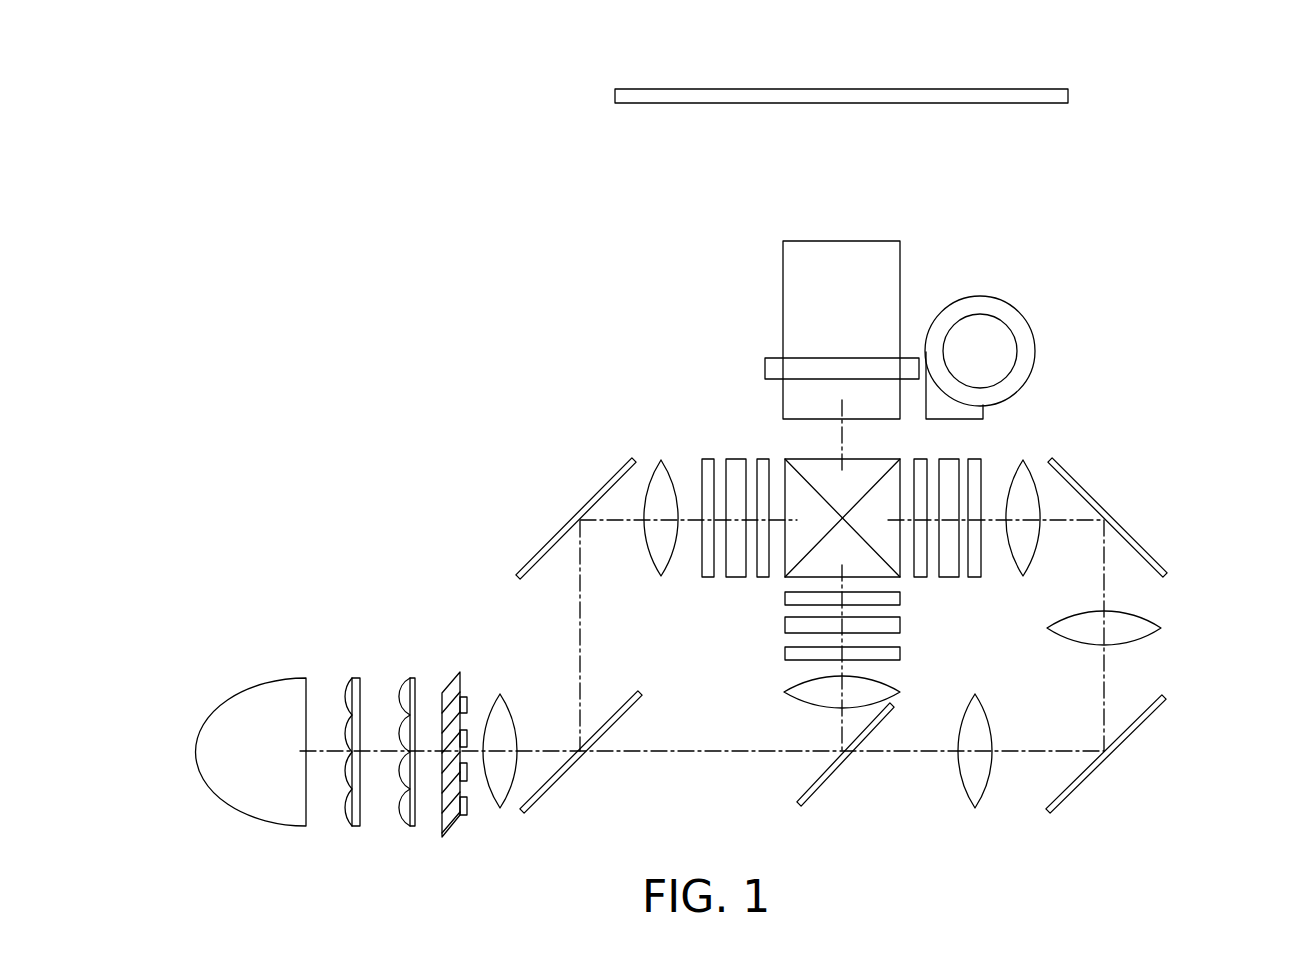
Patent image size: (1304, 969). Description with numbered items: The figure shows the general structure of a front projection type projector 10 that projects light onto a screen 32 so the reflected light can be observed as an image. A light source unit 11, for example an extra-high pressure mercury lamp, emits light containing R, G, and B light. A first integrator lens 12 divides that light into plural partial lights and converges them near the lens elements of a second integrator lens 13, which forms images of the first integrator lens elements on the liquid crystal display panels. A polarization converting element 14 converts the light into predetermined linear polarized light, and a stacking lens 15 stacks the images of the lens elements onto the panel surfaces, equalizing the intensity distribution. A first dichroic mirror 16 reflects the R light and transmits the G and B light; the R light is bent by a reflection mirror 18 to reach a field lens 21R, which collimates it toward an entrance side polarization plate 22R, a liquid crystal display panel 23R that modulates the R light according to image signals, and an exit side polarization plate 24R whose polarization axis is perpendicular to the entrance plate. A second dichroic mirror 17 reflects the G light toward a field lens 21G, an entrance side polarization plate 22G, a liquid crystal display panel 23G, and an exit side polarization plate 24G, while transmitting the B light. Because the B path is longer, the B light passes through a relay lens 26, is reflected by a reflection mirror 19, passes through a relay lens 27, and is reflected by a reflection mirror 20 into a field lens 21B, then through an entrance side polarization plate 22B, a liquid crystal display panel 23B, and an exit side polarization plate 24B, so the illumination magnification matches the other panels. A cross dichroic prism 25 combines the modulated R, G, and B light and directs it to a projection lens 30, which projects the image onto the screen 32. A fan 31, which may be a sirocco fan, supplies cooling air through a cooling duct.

The projector 10 is at (536, 266).
The light source unit 11 is at (272, 692).
The first integrator lens 12 is at (357, 680).
The second integrator lens 13 is at (410, 680).
The polarization converting element 14 is at (458, 672).
The stacking lens 15 is at (502, 692).
The first dichroic mirror 16 is at (630, 700).
The second dichroic mirror 17 is at (800, 806).
The reflection mirror 18 is at (542, 550).
The reflection mirror 19 is at (1165, 700).
The reflection mirror 20 is at (1147, 550).
The field lens 21R is at (656, 462).
The entrance side polarization plate 22R is at (707, 459).
The liquid crystal display panel 23R is at (730, 459).
The exit side polarization plate 24R is at (763, 459).
The field lens 21G is at (785, 688).
The entrance side polarization plate 22G is at (783, 653).
The liquid crystal display panel 23G is at (783, 625).
The exit side polarization plate 24G is at (783, 595).
The field lens 21B is at (1025, 462).
The entrance side polarization plate 22B is at (975, 460).
The liquid crystal display panel 23B is at (948, 578).
The exit side polarization plate 24B is at (916, 578).
The cross dichroic prism 25 is at (797, 459).
The relay lens 26 is at (977, 808).
The relay lens 27 is at (1152, 623).
The projection lens 30 is at (900, 266).
The fan 31 is at (1012, 318).
The screen 32 is at (1050, 88).